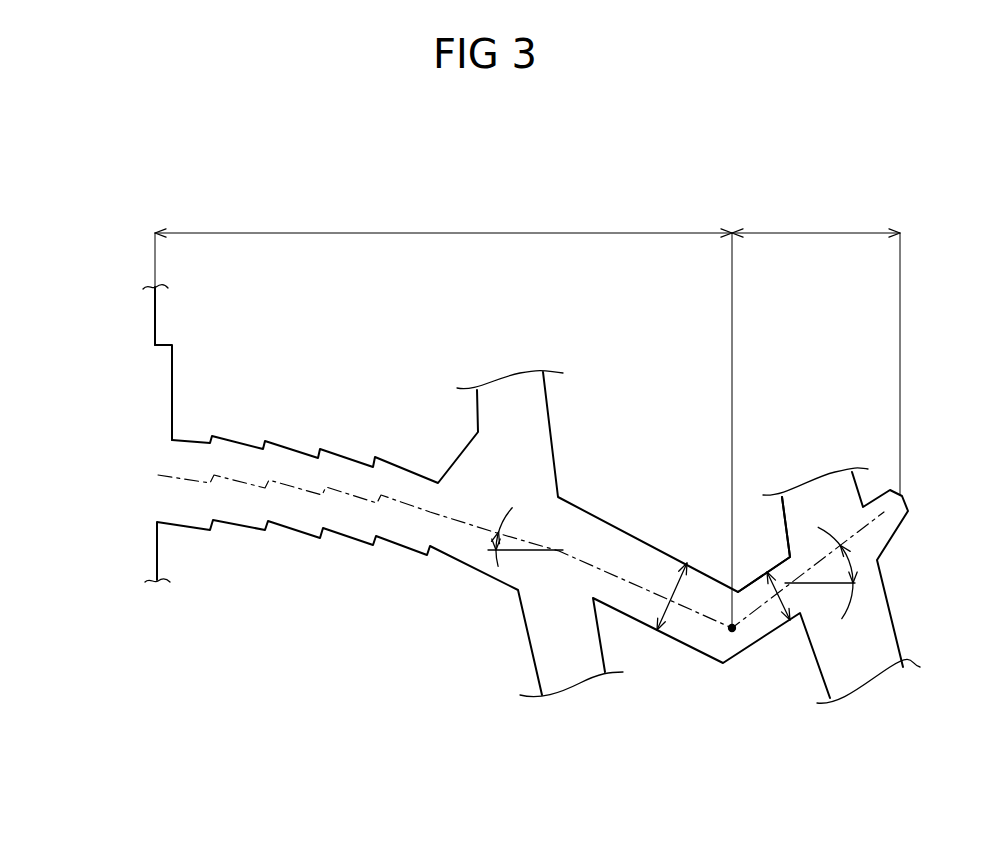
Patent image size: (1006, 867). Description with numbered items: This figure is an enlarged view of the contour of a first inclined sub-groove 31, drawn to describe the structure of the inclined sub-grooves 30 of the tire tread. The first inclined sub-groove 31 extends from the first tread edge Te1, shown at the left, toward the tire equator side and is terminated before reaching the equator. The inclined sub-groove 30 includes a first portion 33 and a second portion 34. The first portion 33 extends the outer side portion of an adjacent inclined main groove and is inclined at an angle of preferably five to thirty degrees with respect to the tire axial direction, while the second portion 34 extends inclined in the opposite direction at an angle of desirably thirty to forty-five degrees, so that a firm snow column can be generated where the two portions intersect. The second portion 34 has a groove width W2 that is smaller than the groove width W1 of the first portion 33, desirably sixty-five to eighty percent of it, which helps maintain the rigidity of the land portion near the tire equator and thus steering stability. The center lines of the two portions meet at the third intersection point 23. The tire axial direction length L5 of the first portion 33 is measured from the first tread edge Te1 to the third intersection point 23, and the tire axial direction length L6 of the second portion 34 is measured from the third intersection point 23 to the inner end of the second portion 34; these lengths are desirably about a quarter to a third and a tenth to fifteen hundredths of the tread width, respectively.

The inclined sub-groove 30 is at (531, 494).
The first inclined sub-groove 31 is at (385, 442).
The first tread edge Te1 is at (153, 314).
The tire axial direction length of the first portion L5 is at (443, 410).
The tire axial direction length of the second portion L6 is at (816, 345).
The first portion 33 is at (357, 510).
The second portion 34 is at (781, 563).
The third intersection point 23 is at (735, 637).
The groove width of the first portion W1 is at (670, 607).
The groove width of the second portion W2 is at (770, 608).